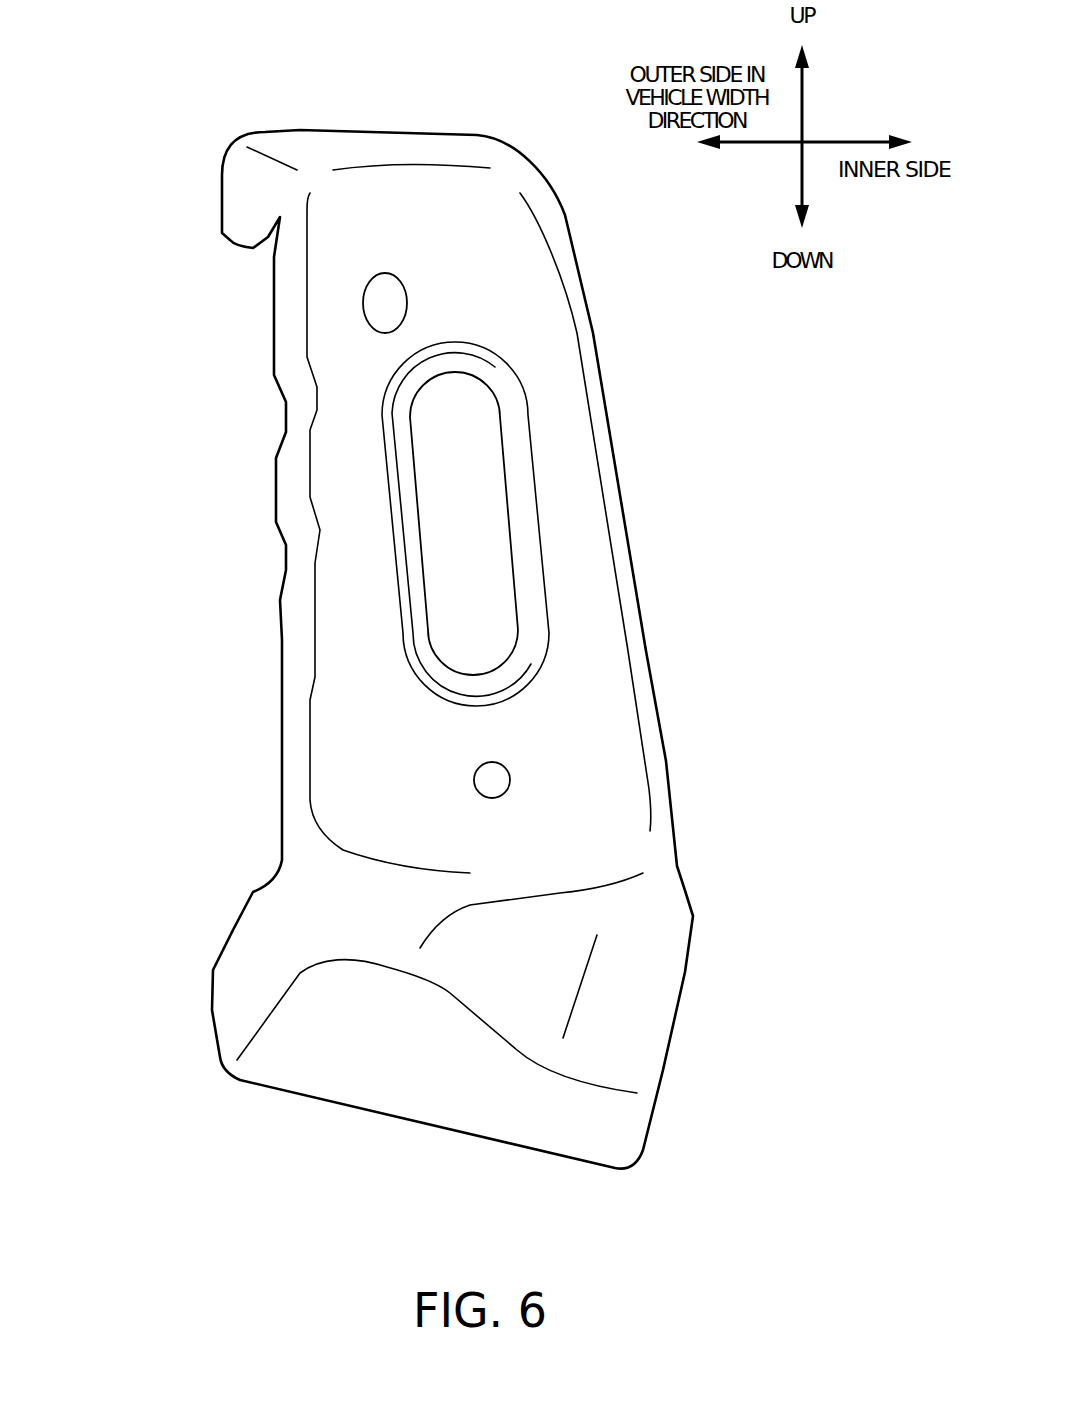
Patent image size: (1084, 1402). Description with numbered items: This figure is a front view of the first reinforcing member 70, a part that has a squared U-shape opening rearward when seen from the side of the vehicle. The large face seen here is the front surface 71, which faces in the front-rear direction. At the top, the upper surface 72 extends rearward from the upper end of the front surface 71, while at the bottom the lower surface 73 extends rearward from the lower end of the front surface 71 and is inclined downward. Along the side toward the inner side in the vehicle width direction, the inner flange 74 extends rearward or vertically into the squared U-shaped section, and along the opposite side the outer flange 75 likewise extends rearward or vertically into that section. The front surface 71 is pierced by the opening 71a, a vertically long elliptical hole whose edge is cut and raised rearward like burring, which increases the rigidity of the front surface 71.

The first reinforcing member 70 is at (240, 558).
The front surface 71 is at (569, 789).
The opening 71a is at (502, 667).
The upper surface 72 is at (358, 145).
The lower surface 73 is at (402, 1093).
The inner flange 74 is at (626, 618).
The outer flange 75 is at (290, 777).